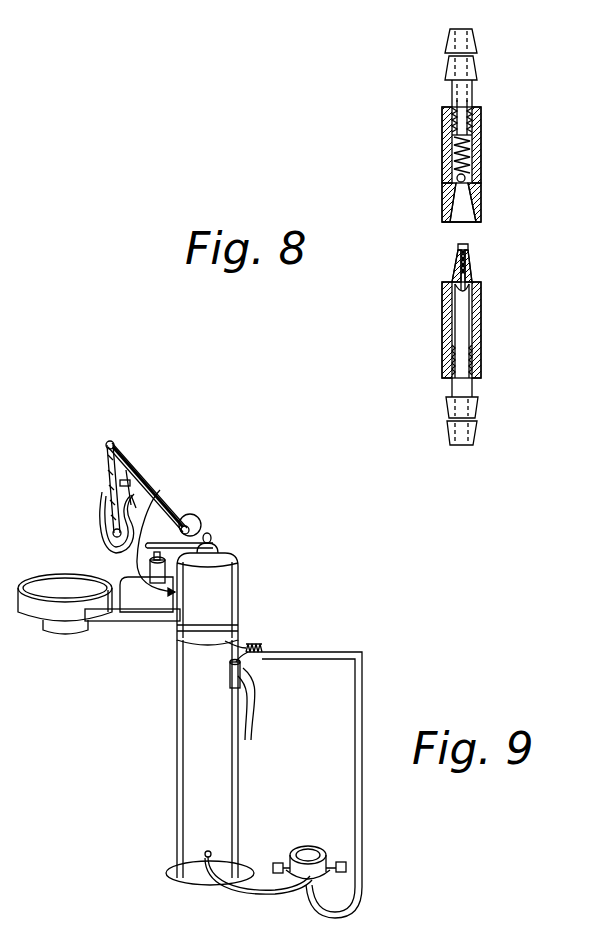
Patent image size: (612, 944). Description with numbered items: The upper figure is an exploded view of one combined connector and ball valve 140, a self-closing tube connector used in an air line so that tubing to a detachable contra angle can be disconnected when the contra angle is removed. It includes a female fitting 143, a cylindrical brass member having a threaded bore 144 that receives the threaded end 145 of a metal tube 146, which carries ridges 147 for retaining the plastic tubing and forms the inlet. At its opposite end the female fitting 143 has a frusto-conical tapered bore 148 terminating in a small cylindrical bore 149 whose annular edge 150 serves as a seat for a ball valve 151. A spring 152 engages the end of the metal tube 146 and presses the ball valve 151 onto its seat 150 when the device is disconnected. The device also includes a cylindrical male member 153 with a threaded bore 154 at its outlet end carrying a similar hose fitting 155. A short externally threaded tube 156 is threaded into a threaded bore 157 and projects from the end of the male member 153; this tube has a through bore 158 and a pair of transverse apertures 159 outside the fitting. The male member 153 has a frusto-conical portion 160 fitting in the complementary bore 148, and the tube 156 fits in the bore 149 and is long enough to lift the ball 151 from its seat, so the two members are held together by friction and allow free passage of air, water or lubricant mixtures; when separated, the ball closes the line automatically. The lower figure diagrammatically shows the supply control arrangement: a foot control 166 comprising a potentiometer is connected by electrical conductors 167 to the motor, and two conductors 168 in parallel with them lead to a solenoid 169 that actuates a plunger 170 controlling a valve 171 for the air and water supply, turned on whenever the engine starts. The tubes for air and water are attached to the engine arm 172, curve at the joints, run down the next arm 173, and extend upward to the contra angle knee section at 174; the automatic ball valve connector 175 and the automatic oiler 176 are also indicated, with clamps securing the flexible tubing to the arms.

In FIG. 8, the combined connector and ball valve 140 is at (550, 234).
In FIG. 8, the female fitting 143 is at (483, 197).
In FIG. 8, the threaded bore 144 is at (452, 119).
In FIG. 8, the threaded end 145 is at (481, 112).
In FIG. 8, the metal tube 146 is at (478, 73).
In FIG. 8, the ridges 147 is at (478, 50).
In FIG. 8, the frusto-conical tapered bore 148 is at (467, 197).
In FIG. 8, the small cylindrical bore 149 is at (450, 192).
In FIG. 8, the annular edge 150 is at (456, 179).
In FIG. 8, the ball valve 151 is at (466, 185).
In FIG. 8, the spring 152 is at (474, 150).
In FIG. 8, the male member 153 is at (482, 343).
In FIG. 8, the threaded bore 154 is at (454, 364).
In FIG. 8, the hose fitting 155 is at (470, 411).
In FIG. 8, the externally threaded tube 156 is at (457, 247).
In FIG. 8, the threaded bore 157 is at (471, 273).
In FIG. 8, the through bore 158 is at (463, 281).
In FIG. 8, the transverse apertures 159 is at (468, 252).
In FIG. 8, the frusto-conical portion 160 is at (455, 269).
In FIG. 9, the foot control 166 is at (335, 822).
In FIG. 9, the electrical conductors 167 is at (271, 893).
In FIG. 9, the conductors 168 is at (358, 895).
In FIG. 9, the solenoid 169 is at (250, 643).
In FIG. 9, the plunger 170 is at (262, 650).
In FIG. 9, the valve 171 is at (243, 671).
In FIG. 9, the engine arm 172 is at (125, 460).
In FIG. 9, the next arm 173 is at (110, 460).
In FIG. 9, the contra angle knee section 174 is at (100, 503).
In FIG. 9, the automatic ball valve connector 175 is at (145, 497).
In FIG. 9, the automatic oiler 176 is at (130, 486).